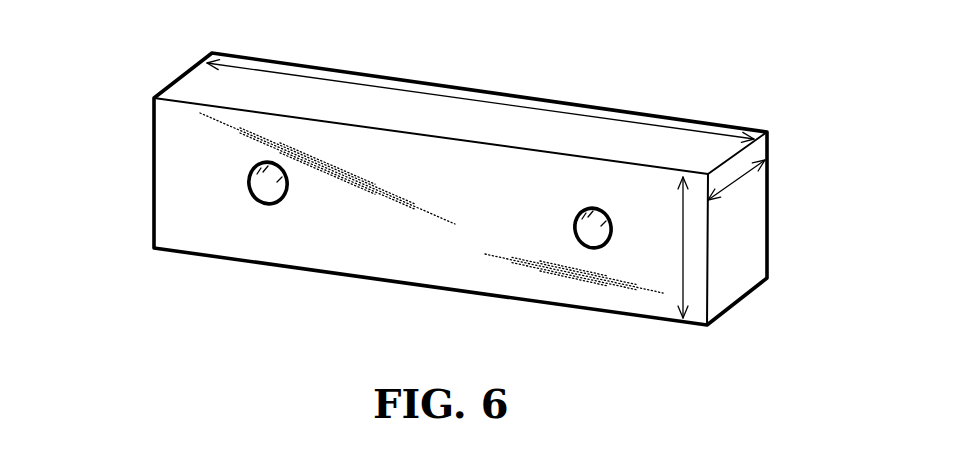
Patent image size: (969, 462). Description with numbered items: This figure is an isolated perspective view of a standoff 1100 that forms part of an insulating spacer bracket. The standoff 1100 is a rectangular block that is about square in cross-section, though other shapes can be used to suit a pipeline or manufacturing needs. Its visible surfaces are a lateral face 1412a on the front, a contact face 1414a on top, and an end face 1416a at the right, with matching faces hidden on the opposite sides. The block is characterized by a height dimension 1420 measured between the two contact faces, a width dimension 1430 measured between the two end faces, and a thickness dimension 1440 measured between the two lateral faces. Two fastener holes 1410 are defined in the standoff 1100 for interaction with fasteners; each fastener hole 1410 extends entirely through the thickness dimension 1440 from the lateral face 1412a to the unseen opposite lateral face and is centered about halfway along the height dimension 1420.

The standoff 1100 is at (162, 270).
The fastener hole 1410 is at (259, 205).
The lateral face 1412a is at (452, 260).
The contact face 1414a is at (573, 145).
The end face 1416a is at (737, 268).
The height dimension 1420 is at (683, 240).
The width dimension 1430 is at (440, 96).
The thickness dimension 1440 is at (735, 182).